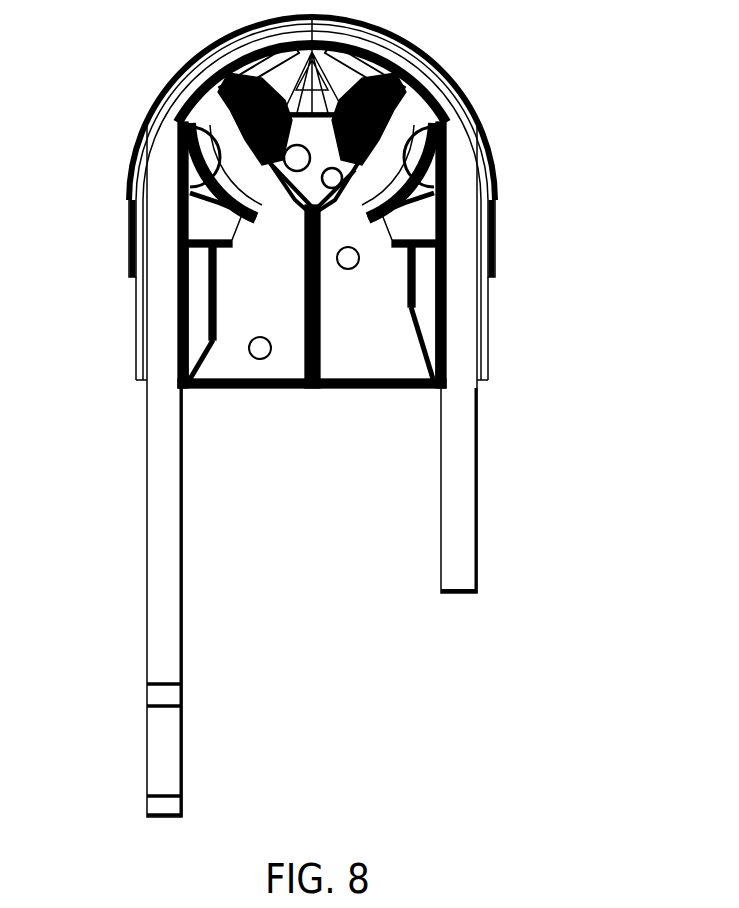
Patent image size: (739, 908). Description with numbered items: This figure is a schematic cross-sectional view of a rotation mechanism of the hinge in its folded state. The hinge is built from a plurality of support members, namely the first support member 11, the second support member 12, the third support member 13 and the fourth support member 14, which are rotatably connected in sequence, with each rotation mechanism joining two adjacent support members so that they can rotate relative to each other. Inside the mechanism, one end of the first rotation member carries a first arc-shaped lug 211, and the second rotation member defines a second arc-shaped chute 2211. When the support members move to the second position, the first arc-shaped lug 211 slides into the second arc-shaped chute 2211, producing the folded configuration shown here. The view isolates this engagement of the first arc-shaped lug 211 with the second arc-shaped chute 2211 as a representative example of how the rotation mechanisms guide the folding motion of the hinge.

The first support member 11 is at (170, 578).
The second support member 12 is at (227, 72).
The third support member 13 is at (390, 70).
The fourth support member 14 is at (448, 523).
The first arc-shaped lug 211 is at (222, 158).
The second arc-shaped chute 2211 is at (185, 183).